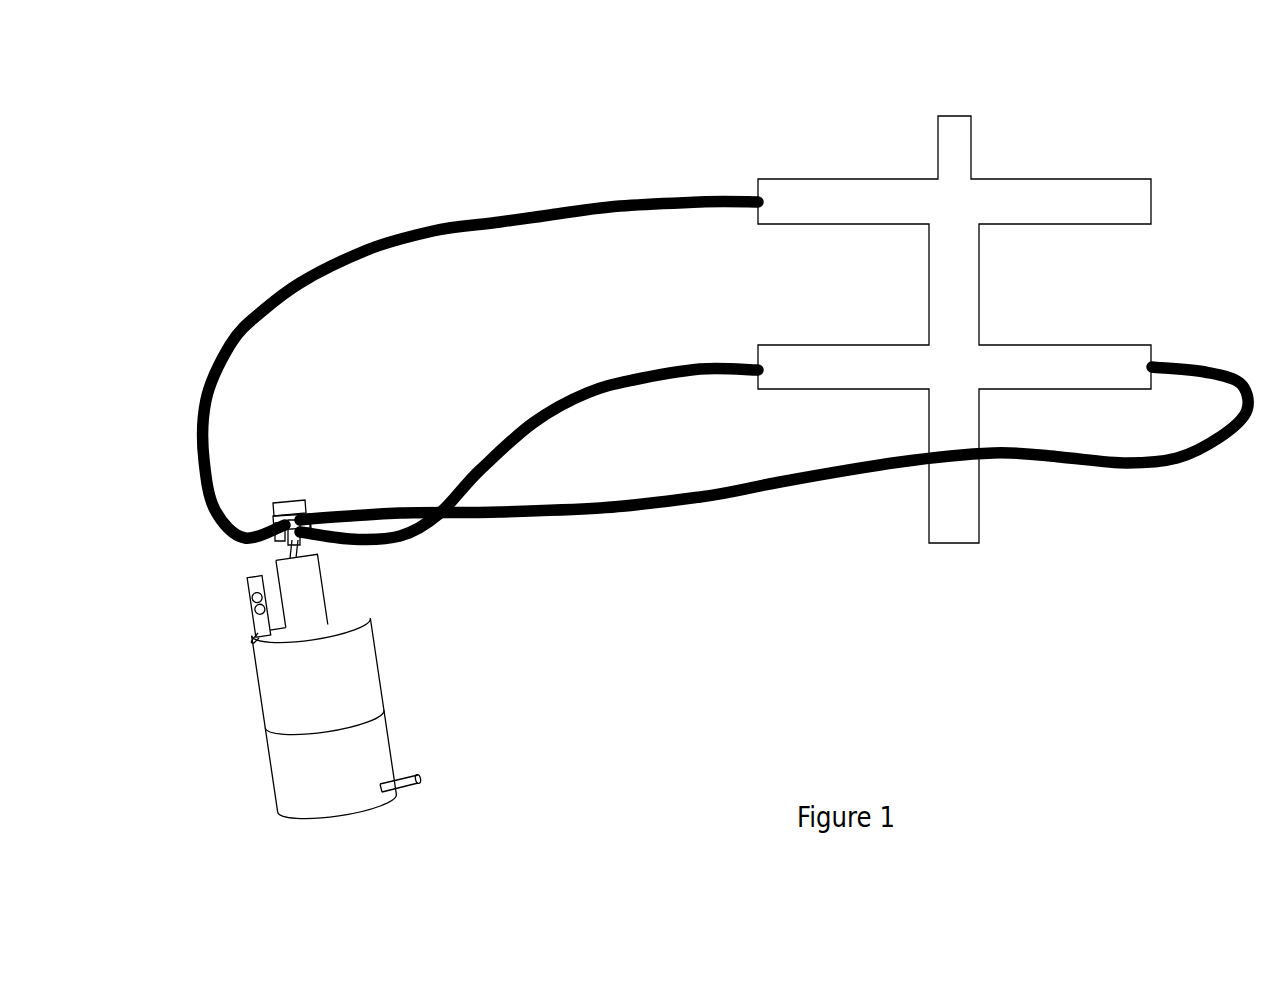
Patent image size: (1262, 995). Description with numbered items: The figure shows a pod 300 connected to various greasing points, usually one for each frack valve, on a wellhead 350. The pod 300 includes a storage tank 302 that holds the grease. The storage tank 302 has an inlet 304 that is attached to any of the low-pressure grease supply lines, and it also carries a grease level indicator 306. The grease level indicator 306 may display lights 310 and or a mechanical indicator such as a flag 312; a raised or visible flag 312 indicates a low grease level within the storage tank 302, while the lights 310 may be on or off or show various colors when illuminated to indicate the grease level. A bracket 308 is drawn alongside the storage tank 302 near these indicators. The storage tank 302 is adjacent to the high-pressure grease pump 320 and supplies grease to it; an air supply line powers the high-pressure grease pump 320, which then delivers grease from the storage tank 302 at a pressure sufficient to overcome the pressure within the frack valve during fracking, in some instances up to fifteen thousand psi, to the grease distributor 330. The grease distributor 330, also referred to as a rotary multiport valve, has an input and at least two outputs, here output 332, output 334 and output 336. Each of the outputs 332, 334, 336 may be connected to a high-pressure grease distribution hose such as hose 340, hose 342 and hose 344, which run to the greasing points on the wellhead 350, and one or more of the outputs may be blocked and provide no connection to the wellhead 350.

The pod 300 is at (553, 705).
The storage tank 302 is at (285, 768).
The inlet 304 is at (405, 782).
The grease level indicator 306 is at (250, 636).
The bracket 308 is at (245, 581).
The lights 310 is at (258, 610).
The flag 312 is at (256, 597).
The high-pressure grease pump 320 is at (302, 585).
The grease distributor 330 is at (278, 508).
The output 332 is at (273, 523).
The output 334 is at (277, 513).
The output 336 is at (310, 517).
The hose 340 is at (543, 208).
The hose 342 is at (624, 372).
The hose 344 is at (718, 488).
The wellhead 350 is at (960, 131).